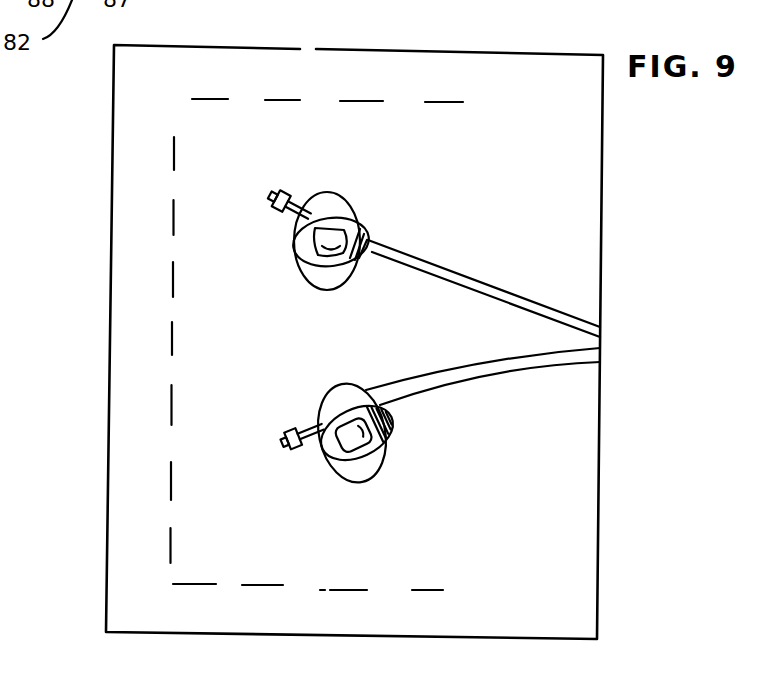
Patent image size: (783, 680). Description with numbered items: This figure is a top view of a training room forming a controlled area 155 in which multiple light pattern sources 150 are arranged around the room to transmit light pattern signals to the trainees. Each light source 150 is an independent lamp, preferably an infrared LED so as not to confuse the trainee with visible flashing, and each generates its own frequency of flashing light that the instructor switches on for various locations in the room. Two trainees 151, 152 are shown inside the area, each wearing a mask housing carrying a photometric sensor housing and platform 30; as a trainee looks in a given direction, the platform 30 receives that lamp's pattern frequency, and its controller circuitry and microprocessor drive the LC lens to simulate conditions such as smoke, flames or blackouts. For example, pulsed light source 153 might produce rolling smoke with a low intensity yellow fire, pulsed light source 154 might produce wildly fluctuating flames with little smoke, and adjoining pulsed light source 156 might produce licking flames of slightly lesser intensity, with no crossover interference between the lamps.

The photometric sensor housing and platform 30 is at (312, 223).
The light pattern source 150 is at (167, 535).
The trainee 151 is at (337, 210).
The trainee 152 is at (375, 462).
The pulsed light source 153 is at (289, 100).
The pulsed light source 154 is at (248, 586).
The controlled area 155 is at (575, 178).
The adjoining pulsed light source 156 is at (360, 592).